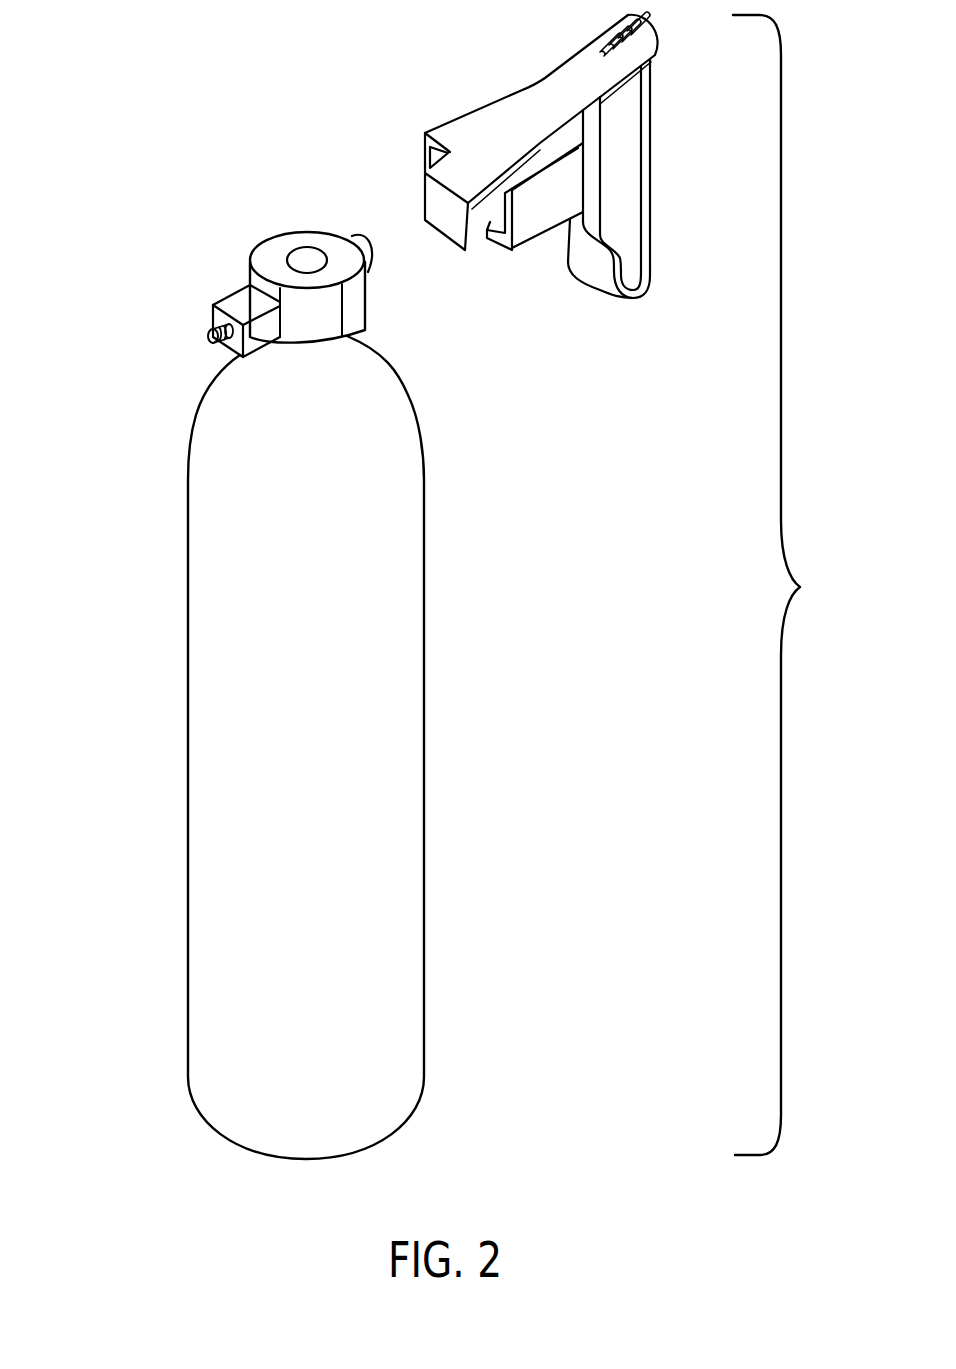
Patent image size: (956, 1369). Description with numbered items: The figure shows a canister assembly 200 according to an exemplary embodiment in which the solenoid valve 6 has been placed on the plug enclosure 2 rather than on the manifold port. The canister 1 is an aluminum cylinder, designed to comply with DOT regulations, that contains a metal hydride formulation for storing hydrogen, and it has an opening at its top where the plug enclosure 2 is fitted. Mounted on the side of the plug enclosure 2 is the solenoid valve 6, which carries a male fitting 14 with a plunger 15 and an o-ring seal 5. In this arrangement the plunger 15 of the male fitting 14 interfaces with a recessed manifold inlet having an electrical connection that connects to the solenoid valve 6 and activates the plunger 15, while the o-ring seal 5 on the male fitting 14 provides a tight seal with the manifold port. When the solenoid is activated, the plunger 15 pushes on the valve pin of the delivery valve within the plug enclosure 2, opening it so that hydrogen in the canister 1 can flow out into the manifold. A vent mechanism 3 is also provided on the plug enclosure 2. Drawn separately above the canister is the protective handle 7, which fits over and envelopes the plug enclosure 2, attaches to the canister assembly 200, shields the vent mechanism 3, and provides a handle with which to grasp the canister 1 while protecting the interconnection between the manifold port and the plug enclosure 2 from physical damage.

The canister 1 is at (383, 737).
The plug enclosure 2 is at (302, 241).
The vent mechanism 3 is at (362, 237).
The o-ring seal 5 is at (223, 343).
The solenoid valve 6 is at (240, 288).
The protective handle 7 is at (650, 162).
The male fitting 14 is at (216, 318).
The plunger 15 is at (203, 338).
The canister assembly 200 is at (791, 585).